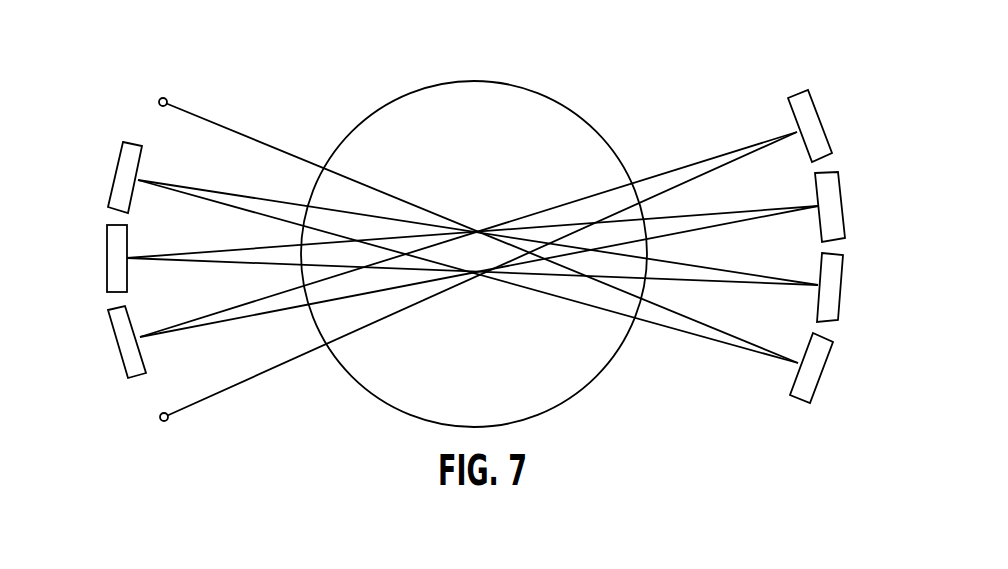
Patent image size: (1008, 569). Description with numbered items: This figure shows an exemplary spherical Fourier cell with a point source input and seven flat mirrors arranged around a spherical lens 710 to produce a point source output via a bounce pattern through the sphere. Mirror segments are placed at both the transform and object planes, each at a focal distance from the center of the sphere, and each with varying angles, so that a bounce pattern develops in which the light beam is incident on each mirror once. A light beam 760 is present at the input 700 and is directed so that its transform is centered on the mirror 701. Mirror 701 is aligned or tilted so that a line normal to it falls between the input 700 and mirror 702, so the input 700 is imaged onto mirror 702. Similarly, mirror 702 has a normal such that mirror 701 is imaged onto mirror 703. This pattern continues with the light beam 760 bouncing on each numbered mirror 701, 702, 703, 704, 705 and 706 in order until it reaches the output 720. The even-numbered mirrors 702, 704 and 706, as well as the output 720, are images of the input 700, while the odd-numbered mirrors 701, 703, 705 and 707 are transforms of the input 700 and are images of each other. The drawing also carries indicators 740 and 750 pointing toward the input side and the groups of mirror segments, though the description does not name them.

The input 700 is at (164, 421).
The mirror 701 is at (824, 128).
The mirror 702 is at (117, 333).
The mirror 703 is at (845, 218).
The mirror 704 is at (438, 249).
The mirror 705 is at (842, 298).
The mirror 706 is at (108, 188).
The mirror 707 is at (825, 372).
The spherical lens 710 is at (583, 388).
The output 720 is at (165, 97).
The light source side 740 is at (243, 497).
The optical element array 750 is at (80, 312).
The light beam 760 is at (302, 354).